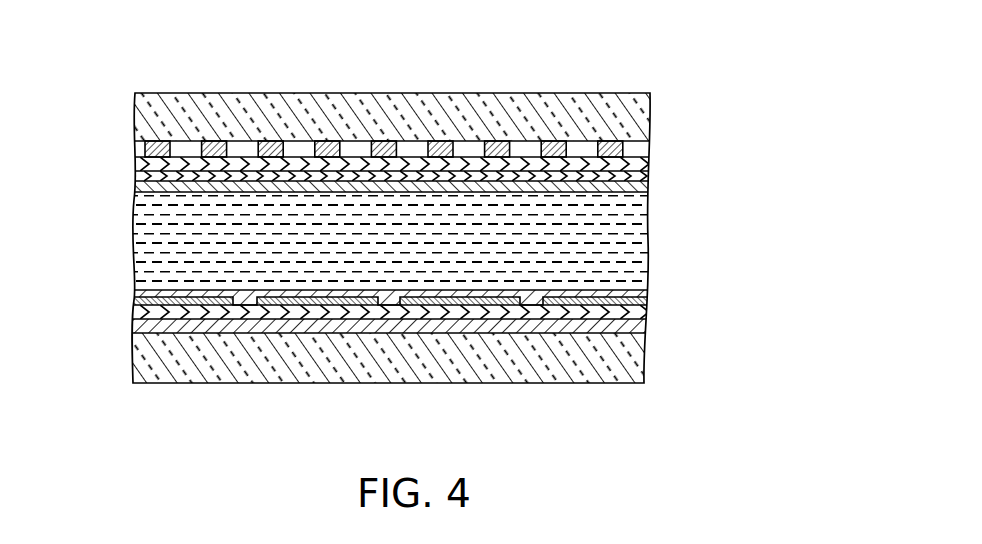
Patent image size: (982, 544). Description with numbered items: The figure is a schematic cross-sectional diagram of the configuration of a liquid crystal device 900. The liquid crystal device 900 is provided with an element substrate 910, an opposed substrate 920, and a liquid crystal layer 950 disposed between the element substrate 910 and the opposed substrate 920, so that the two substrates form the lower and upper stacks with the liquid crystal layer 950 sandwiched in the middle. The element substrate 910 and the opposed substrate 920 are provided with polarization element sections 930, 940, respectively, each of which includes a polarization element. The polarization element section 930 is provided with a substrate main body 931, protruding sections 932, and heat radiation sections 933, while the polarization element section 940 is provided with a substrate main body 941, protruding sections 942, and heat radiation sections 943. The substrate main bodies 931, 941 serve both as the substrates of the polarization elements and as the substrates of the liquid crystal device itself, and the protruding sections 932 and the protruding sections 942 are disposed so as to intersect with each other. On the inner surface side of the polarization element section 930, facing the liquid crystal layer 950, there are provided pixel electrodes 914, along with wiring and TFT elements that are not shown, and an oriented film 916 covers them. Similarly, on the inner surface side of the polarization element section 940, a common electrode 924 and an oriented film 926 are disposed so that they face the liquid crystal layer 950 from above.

The liquid crystal device 900 is at (622, 94).
The element substrate 910 is at (125, 288).
The opposed substrate 920 is at (125, 93).
The polarization element section 940 is at (713, 98).
The substrate main body 941 is at (643, 119).
The protruding sections 942 is at (623, 150).
The heat radiation sections 943 is at (643, 165).
The common electrode 924 is at (645, 175).
The oriented film 926 is at (647, 190).
The liquid crystal layer 950 is at (640, 240).
The oriented film 916 is at (647, 293).
The pixel electrodes 914 is at (173, 300).
The polarization element section 930 is at (711, 293).
The heat radiation sections 933 is at (647, 311).
The protruding sections 932 is at (647, 327).
The substrate main body 931 is at (640, 360).